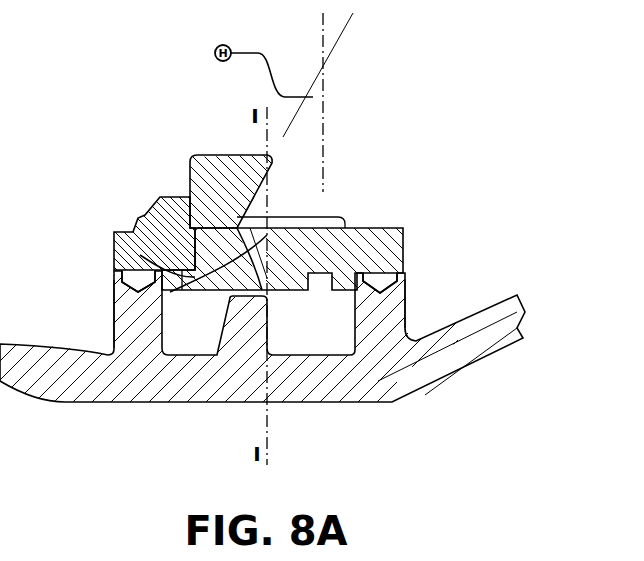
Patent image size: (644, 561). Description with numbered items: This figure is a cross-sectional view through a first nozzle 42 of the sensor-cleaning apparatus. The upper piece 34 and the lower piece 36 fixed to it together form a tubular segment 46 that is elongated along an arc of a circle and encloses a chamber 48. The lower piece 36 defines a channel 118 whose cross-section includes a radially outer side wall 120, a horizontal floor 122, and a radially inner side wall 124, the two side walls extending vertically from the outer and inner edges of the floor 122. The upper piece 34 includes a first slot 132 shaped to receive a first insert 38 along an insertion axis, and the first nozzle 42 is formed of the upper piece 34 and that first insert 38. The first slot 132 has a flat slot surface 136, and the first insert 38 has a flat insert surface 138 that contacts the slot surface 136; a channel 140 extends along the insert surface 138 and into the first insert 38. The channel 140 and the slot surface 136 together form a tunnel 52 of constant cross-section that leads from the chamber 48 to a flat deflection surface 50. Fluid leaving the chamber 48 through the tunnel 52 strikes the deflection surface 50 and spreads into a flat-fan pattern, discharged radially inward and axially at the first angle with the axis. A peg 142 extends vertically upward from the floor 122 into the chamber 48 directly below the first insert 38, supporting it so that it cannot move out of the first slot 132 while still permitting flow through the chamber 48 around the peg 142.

The upper piece 34 is at (358, 228).
The lower piece 36 is at (116, 403).
The first insert 38 is at (160, 290).
The first nozzle 42 is at (293, 195).
The tubular segment 46 is at (381, 403).
The chamber 48 is at (192, 330).
The deflection surface 50 is at (272, 158).
The tunnel 52 is at (250, 240).
The channel 118 is at (348, 353).
The radially outer side wall 120 is at (137, 322).
The floor 122 is at (319, 385).
The radially inner side wall 124 is at (405, 312).
The first slot 132 is at (196, 248).
The slot surface 136 is at (267, 289).
The insert surface 138 is at (258, 276).
The channel 140 is at (196, 253).
The peg 142 is at (268, 323).